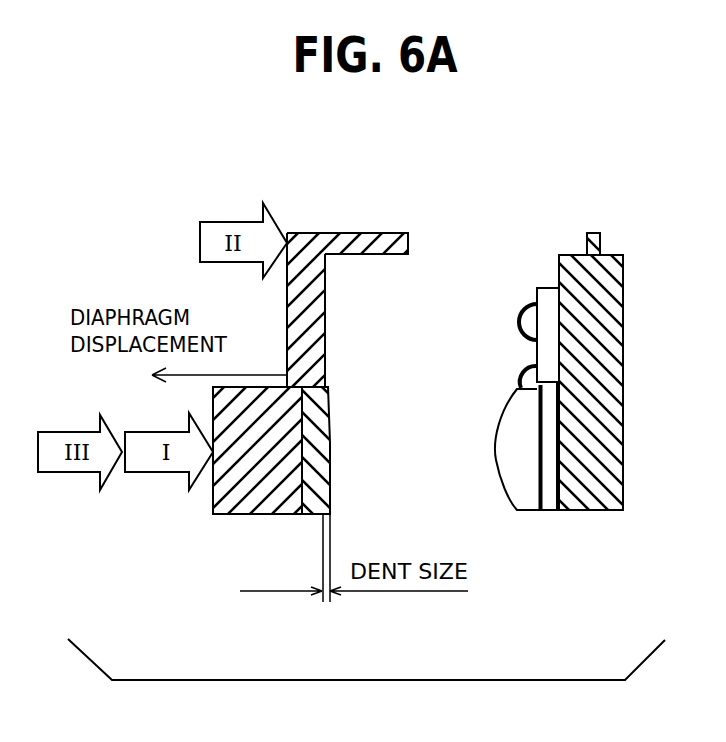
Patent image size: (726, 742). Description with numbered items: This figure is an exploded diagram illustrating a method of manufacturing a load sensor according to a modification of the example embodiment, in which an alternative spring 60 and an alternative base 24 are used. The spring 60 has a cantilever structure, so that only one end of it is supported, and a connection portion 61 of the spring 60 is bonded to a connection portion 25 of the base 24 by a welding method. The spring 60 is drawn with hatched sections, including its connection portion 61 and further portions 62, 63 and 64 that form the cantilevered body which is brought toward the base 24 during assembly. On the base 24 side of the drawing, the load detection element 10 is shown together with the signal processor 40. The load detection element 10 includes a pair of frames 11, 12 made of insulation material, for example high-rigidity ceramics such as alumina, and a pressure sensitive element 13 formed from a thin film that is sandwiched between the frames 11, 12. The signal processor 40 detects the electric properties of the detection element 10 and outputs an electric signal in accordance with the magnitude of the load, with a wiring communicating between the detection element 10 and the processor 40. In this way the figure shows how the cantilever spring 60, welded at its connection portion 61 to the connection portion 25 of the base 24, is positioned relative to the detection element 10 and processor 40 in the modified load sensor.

The load detection element 10 is at (507, 498).
The frame 11 is at (523, 505).
The frame 12 is at (552, 510).
The pressure sensitive element 13 is at (542, 512).
The base 24 is at (620, 398).
The connection portion 25 is at (597, 242).
The signal processor 40 is at (540, 295).
The spring 60 is at (386, 265).
The connection portion 61 is at (408, 243).
The stopper protrusion 62 is at (330, 410).
The stopper stem portion 63 is at (325, 320).
The stopper base block 64 is at (235, 503).